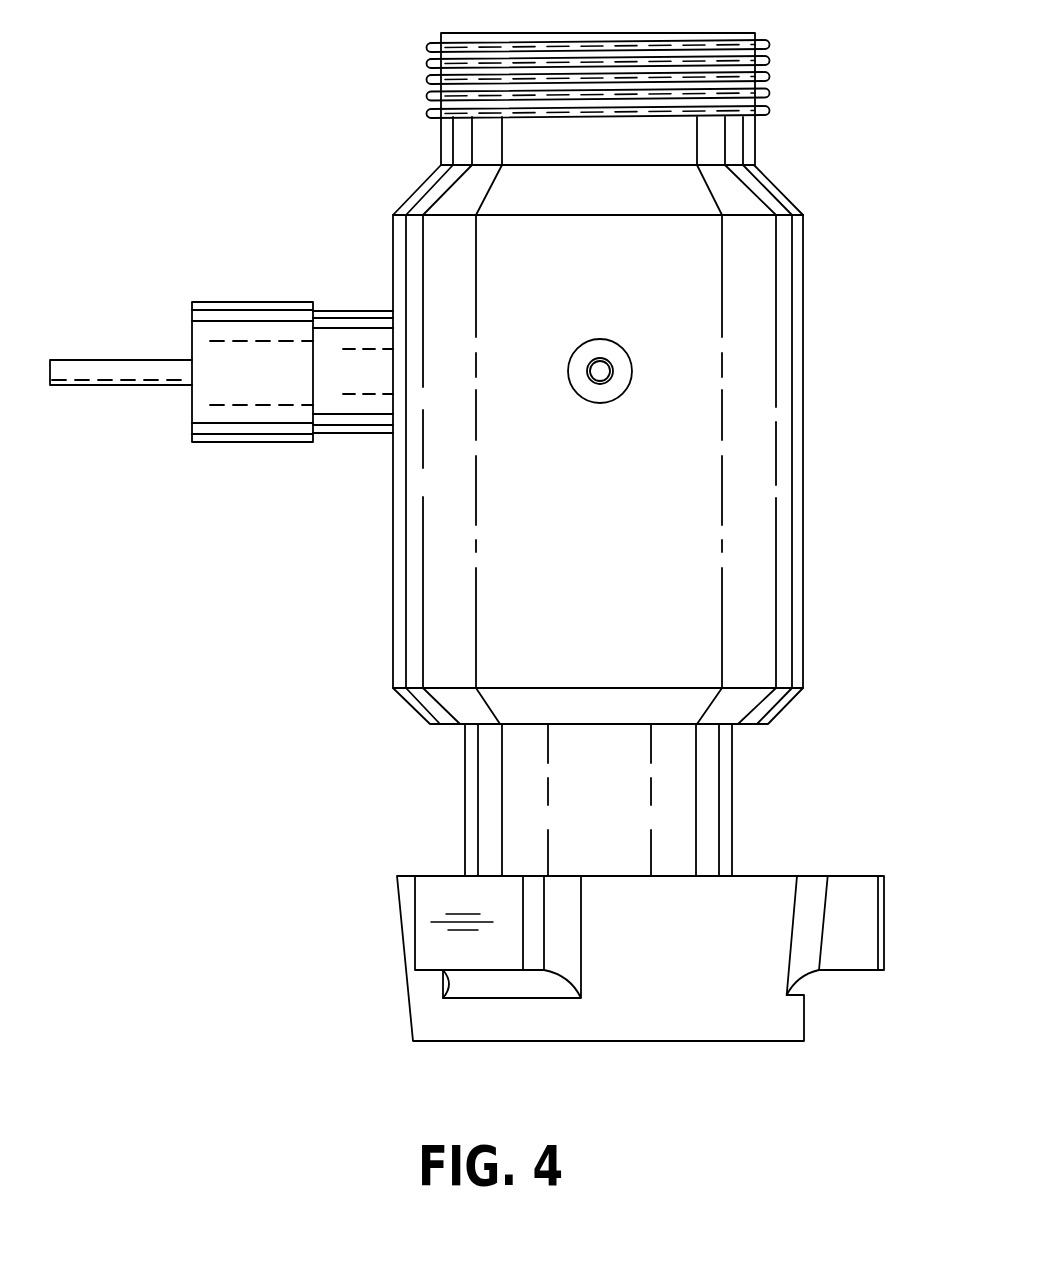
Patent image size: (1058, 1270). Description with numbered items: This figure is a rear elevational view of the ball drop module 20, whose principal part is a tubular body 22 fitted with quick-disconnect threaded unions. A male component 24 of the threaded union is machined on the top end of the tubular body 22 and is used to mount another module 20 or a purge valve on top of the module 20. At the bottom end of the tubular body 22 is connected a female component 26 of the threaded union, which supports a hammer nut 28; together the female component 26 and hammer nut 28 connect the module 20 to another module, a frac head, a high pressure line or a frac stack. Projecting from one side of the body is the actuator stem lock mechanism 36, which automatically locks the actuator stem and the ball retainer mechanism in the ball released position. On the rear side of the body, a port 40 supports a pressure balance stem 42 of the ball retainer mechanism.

The ball drop module 20 is at (848, 452).
The tubular body 22 is at (803, 572).
The male component 24 is at (765, 76).
The female component 26 is at (737, 802).
The hammer nut 28 is at (853, 920).
The actuator stem lock mechanism 36 is at (242, 280).
The port 40 is at (598, 403).
The pressure balance stem 42 is at (600, 371).